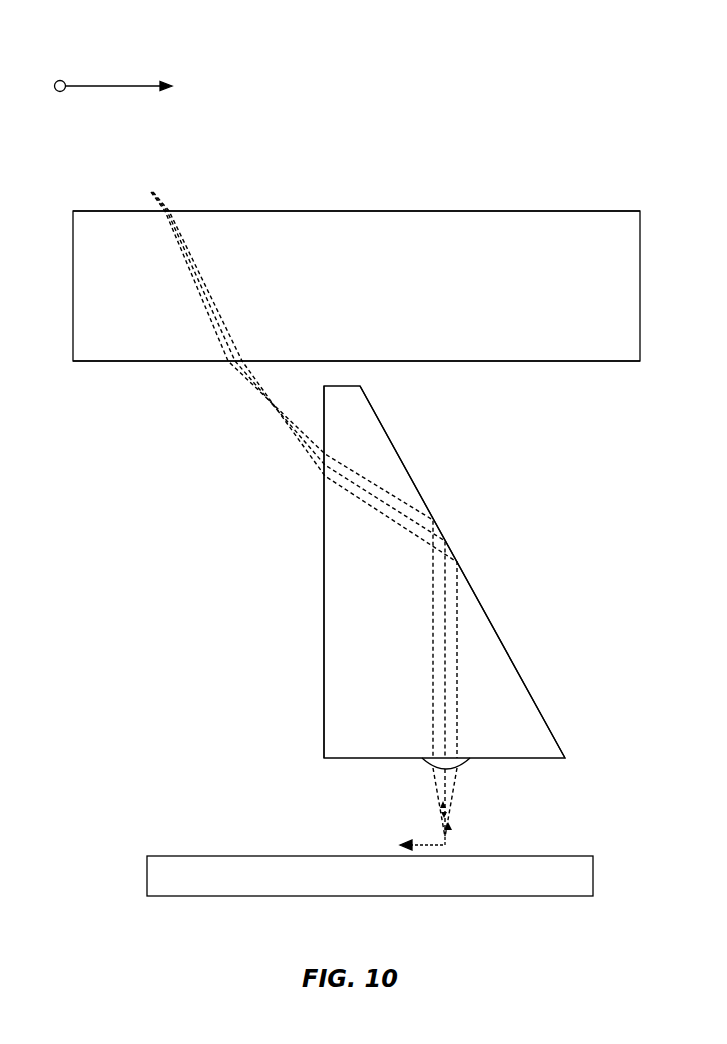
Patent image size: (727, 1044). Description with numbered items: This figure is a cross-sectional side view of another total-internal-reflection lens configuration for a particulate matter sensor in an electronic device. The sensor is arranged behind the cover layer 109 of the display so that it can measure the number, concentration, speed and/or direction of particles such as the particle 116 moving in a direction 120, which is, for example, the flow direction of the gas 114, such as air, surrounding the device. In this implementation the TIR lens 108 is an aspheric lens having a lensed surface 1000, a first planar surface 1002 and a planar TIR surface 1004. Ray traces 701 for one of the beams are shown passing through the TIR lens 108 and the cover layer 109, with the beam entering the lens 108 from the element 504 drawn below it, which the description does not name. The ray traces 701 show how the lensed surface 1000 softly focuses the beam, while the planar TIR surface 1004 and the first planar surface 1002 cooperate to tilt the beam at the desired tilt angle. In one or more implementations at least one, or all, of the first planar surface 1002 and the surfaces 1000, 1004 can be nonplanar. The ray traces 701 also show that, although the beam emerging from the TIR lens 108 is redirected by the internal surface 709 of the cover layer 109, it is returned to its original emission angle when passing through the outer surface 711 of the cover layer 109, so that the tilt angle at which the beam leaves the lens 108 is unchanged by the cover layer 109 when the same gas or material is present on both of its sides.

The particle 116 is at (60, 80).
The direction 120 is at (98, 88).
The gas 114 is at (300, 106).
The cover layer 109 is at (369, 295).
The outer surface 711 is at (550, 211).
The internal surface 709 is at (572, 362).
The TIR lens 108 is at (394, 653).
The first planar surface 1002 is at (324, 602).
The planar TIR surface 1004 is at (421, 530).
The ray traces 701 is at (455, 787).
The lensed surface 1000 is at (426, 769).
The sensor 504 is at (385, 886).